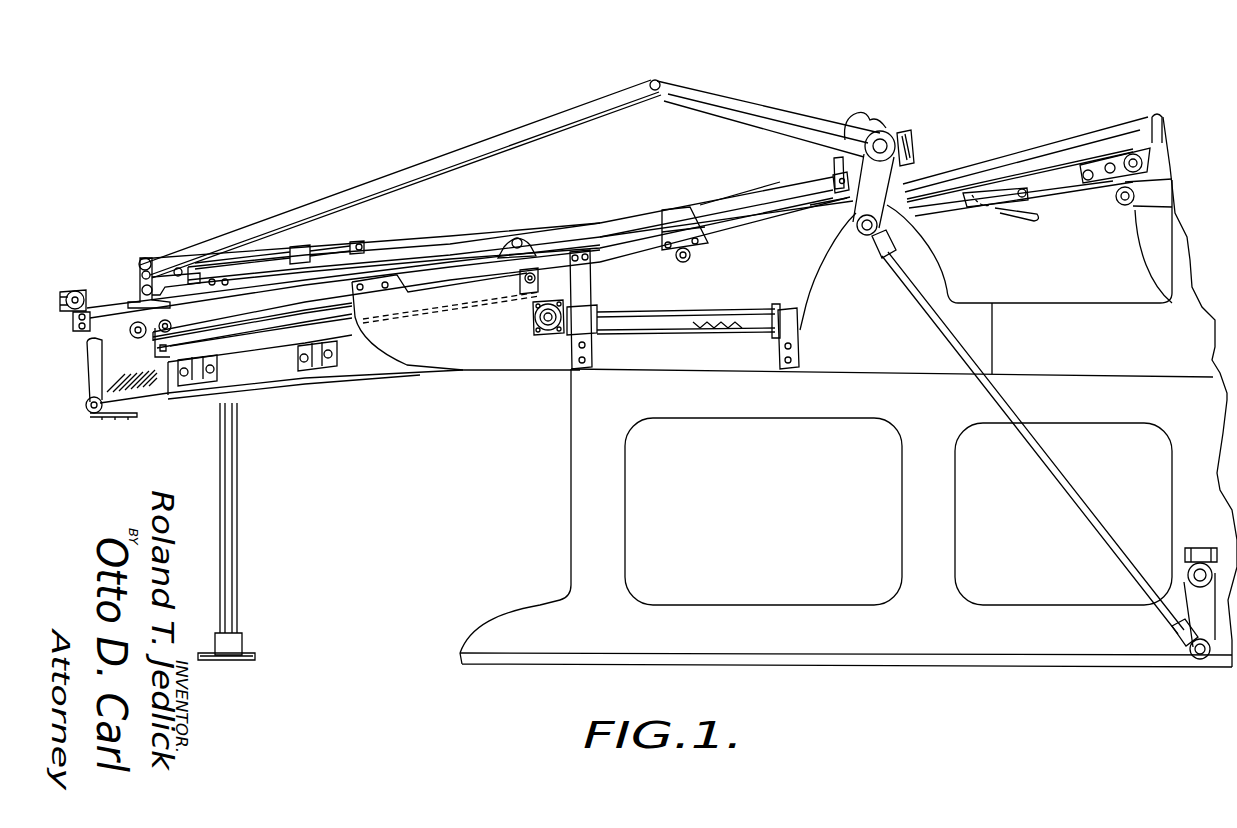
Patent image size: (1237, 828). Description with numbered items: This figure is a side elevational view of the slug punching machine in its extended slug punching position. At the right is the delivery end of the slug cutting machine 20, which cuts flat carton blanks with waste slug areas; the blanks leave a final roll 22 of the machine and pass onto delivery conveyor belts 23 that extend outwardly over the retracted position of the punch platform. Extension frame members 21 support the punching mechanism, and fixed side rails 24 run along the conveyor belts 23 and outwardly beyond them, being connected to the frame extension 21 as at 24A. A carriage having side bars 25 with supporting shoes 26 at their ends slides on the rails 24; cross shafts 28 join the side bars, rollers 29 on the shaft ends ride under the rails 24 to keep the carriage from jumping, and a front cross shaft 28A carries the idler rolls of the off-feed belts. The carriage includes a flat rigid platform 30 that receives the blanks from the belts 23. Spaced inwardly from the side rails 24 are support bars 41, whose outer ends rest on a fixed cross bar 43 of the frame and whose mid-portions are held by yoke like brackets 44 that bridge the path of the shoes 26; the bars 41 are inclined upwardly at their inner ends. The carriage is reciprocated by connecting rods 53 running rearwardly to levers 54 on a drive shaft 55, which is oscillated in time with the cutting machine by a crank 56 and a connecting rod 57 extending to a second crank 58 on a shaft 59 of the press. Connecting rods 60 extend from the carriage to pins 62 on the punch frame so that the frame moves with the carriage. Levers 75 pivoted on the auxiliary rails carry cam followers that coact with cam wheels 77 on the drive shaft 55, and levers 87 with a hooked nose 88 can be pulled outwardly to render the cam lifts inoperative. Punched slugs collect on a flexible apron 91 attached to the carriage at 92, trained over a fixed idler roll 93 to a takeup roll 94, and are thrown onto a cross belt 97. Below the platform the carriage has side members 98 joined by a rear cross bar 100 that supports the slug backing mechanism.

The delivery end of slug cutting machine 20 is at (1062, 318).
The extension frame members 21 is at (523, 362).
The final roll 22 is at (1142, 230).
The delivery conveyor belts 23 is at (1034, 157).
The fixed side rails 24 is at (85, 332).
The rail connection to frame extension 24A is at (386, 292).
The carriage side bars 25 is at (470, 242).
The supporting shoes 26 is at (131, 302).
The cross shafts 28 is at (135, 339).
The front cross shaft 28A is at (527, 296).
The rollers 29 is at (170, 320).
The platform 30 is at (275, 314).
The support bars 41 is at (720, 208).
The fixed cross bar 43 is at (77, 292).
The yoke like brackets 44 is at (672, 214).
The connecting rods 53 is at (500, 142).
The levers 54 is at (770, 108).
The drive shaft 55 is at (885, 142).
The crank 56 is at (863, 230).
The connecting rod 57 is at (905, 272).
The second crank 58 is at (1188, 605).
The shaft of the press 59 is at (1190, 568).
The connecting rods 60 is at (216, 260).
The pins 62 is at (367, 247).
The levers 75 is at (834, 161).
The cam wheels 77 is at (912, 123).
The levers 87 is at (879, 138).
The hooked nose 88 is at (853, 118).
The flexible apron 91 is at (270, 342).
The apron connection to carriage 92 is at (165, 332).
The fixed idler roll 93 is at (599, 309).
The takeup roll 94 is at (549, 331).
The cross belt 97 is at (636, 322).
The side members 98 is at (208, 336).
The rear cross bar 100 is at (480, 315).